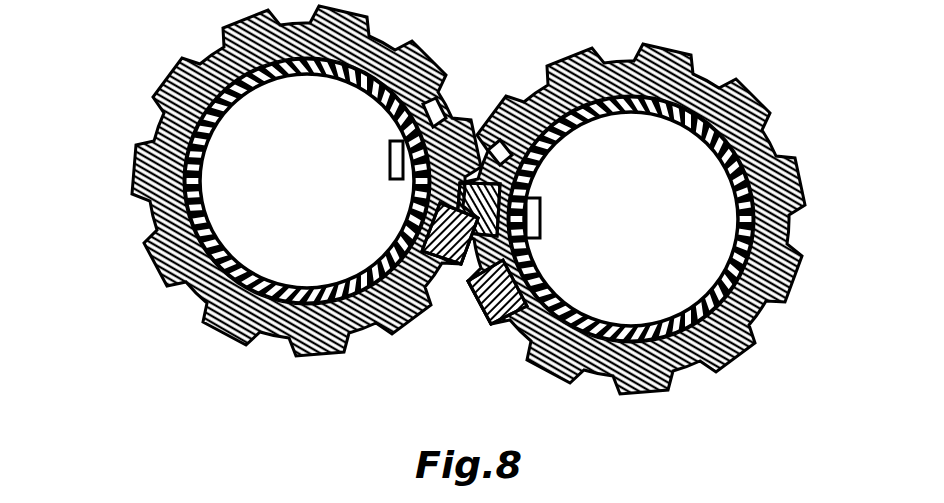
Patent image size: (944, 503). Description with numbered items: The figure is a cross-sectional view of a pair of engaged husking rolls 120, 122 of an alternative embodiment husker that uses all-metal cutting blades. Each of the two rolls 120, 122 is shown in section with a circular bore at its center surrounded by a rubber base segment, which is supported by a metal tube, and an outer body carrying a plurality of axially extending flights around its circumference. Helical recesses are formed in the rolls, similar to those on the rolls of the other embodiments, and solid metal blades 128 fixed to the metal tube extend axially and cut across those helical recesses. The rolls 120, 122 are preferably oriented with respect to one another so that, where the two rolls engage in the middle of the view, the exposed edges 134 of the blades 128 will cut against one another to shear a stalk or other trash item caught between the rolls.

The husking roll 120 is at (273, 221).
The husking roll 122 is at (646, 256).
The solid metal blade 128 is at (443, 273).
The exposed edge 134 is at (462, 278).